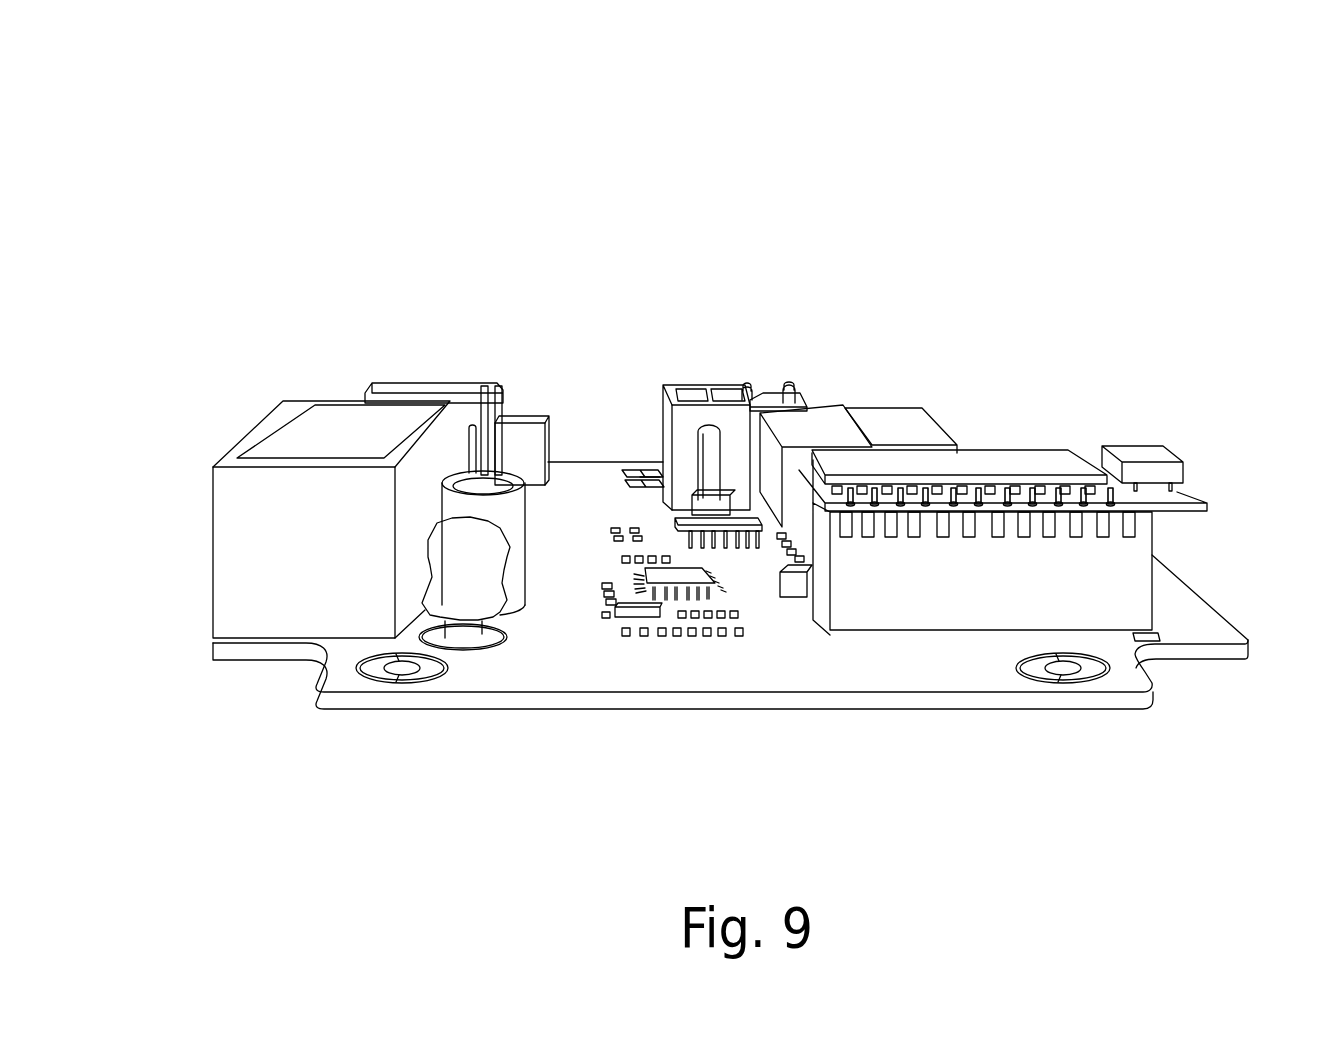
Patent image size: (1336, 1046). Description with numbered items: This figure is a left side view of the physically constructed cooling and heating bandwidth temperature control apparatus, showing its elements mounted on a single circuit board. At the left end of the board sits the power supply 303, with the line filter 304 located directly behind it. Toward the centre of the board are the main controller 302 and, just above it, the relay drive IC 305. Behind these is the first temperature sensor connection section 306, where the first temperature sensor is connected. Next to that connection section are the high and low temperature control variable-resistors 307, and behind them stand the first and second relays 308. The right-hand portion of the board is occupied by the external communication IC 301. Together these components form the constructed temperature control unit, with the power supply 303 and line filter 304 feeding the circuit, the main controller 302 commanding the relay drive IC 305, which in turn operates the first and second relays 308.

The external communication IC 301 is at (973, 460).
The main controller 302 is at (675, 578).
The power supply 303 is at (302, 438).
The line filter 304 is at (487, 402).
The relay drive IC 305 is at (727, 522).
The first temperature sensor connection section 306 is at (695, 418).
The high and low temperature control variable-resistors 307 is at (779, 403).
The first and second relays 308 is at (895, 428).